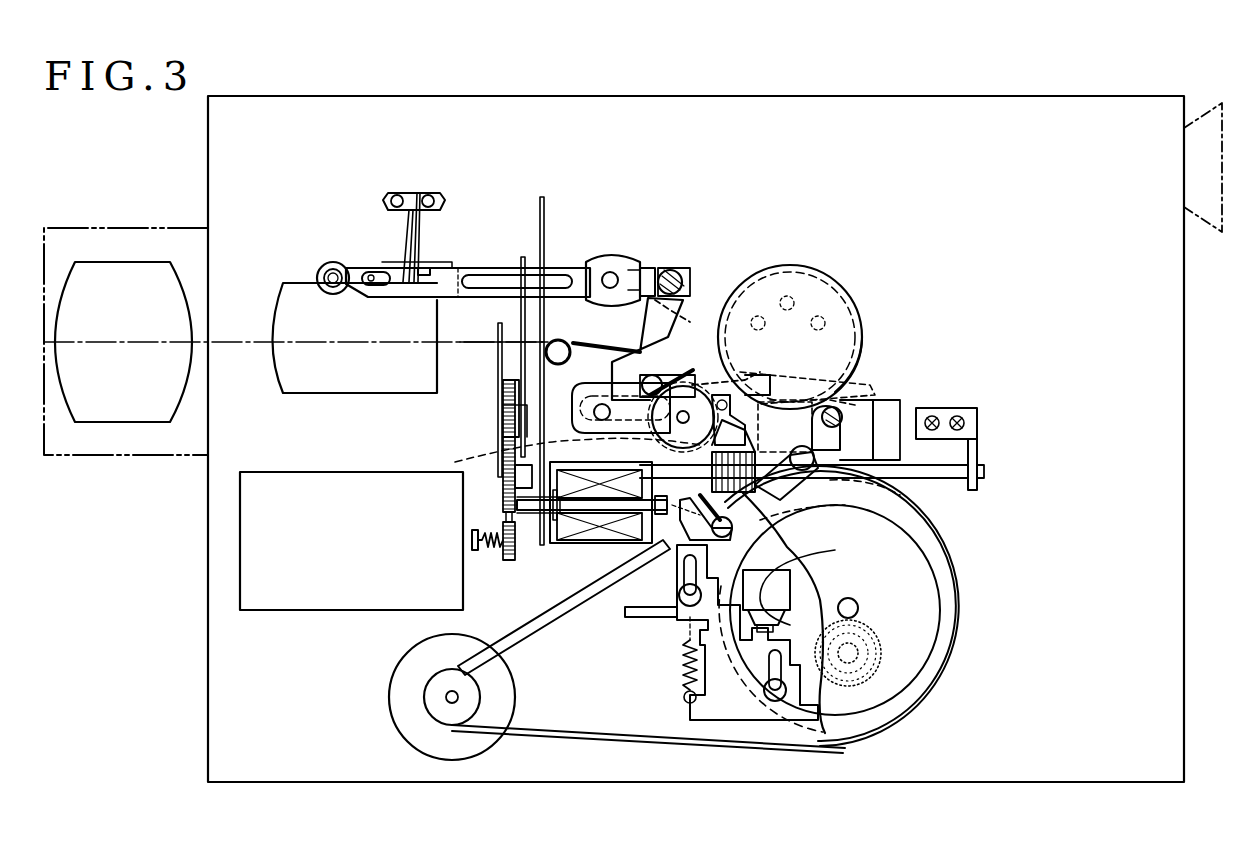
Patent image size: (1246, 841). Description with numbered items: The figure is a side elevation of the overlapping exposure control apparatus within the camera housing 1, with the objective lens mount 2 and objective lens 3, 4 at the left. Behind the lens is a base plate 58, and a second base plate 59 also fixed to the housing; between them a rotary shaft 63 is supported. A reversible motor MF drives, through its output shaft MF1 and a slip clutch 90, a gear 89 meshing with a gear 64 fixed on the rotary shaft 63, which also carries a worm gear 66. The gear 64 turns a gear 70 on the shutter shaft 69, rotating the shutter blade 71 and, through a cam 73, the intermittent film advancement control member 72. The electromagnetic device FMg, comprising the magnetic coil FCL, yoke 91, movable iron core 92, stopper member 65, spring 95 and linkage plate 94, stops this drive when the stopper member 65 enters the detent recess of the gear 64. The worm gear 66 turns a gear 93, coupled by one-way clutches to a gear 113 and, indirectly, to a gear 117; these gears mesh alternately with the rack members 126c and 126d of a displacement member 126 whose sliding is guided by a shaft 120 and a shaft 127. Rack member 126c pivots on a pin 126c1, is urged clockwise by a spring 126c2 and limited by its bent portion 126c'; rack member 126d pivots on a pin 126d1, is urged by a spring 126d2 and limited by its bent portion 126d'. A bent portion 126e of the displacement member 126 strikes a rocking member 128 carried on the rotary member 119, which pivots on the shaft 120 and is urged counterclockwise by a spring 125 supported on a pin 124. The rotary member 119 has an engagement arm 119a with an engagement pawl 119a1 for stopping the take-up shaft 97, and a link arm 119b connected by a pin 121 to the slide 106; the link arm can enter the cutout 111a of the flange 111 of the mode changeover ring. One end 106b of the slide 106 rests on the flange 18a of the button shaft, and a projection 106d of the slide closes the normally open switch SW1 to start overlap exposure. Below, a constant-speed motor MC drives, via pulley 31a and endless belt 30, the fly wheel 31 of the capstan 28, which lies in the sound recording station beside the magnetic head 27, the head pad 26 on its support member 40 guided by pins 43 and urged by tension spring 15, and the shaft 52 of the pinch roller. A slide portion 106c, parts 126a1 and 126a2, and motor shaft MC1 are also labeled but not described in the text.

The camera housing 1 is at (738, 97).
The objective lens mount 2 is at (106, 245).
The objective lens 3 is at (78, 410).
The objective lens 4 is at (288, 381).
The flange 18a is at (320, 268).
The slide 106 is at (553, 268).
The end of slide 106b is at (392, 270).
The lever slot 106c is at (379, 290).
The projection of slide 106d is at (426, 274).
The switch SW1 is at (432, 226).
The base plate 58 is at (542, 210).
The intermittent film advancement control member 72 is at (522, 262).
The shutter blade 71 is at (498, 328).
The pin 124 is at (545, 342).
The spring 125 is at (565, 330).
The flange 111 is at (612, 258).
The cutout 111a is at (645, 270).
The pin 121 is at (678, 270).
The rotary member 119 is at (720, 375).
The link arm 119b is at (660, 262).
The take-up shaft 97 is at (822, 305).
The gear 113 is at (862, 345).
The displacement member 126 is at (829, 356).
The shaft 120 is at (600, 420).
The rack member 126c is at (681, 357).
The gear 117 is at (660, 435).
The spring 126c2 is at (724, 398).
The bent portion 126e is at (758, 395).
The bent portion 126c' is at (764, 309).
The gear 93 is at (852, 395).
The engagement arm 119a is at (868, 444).
The engagement pawl 119a1 is at (867, 410).
The shaft 127 is at (887, 420).
The frame mounting plate 126a1 is at (893, 427).
The base plate 59 is at (978, 451).
The rotary shaft 63 is at (963, 480).
The rocking member 128 is at (736, 494).
The worm gear 66 is at (800, 470).
The linkage plate 94 is at (722, 538).
The gear 70 is at (506, 400).
The cam 73 is at (510, 430).
The shutter shaft 69 is at (505, 428).
The pin 126c1 is at (520, 405).
The frame portion 126a2 is at (505, 462).
The gear 64 is at (515, 477).
The gear 89 is at (510, 561).
The slip clutch 90 is at (490, 552).
The output shaft MF1 is at (472, 538).
The reversible electric motor MF is at (350, 490).
The stopper member 65 is at (530, 512).
The yoke 91 is at (552, 522).
The magnetic coil FCL is at (583, 535).
The movable iron core 92 is at (626, 512).
The electromagnetic device FMg is at (590, 623).
The spring 95 is at (642, 558).
The motor MC is at (400, 705).
The capstan motor shaft MC1 is at (450, 694).
The pulley 31a is at (470, 700).
The endless belt 30 is at (620, 728).
The fly wheel 31 is at (937, 672).
The head pad support member 40 is at (735, 705).
The pins 43 is at (688, 600).
The tension spring 15 is at (688, 655).
The head pad 26 is at (763, 632).
The magnetic head 27 is at (857, 594).
The capstan 28 is at (860, 616).
The shaft 52 is at (866, 670).
The rack member 126d is at (792, 605).
The pin 126d1 is at (870, 481).
The bent portion 126d' is at (785, 627).
The spring 126d2 is at (850, 512).